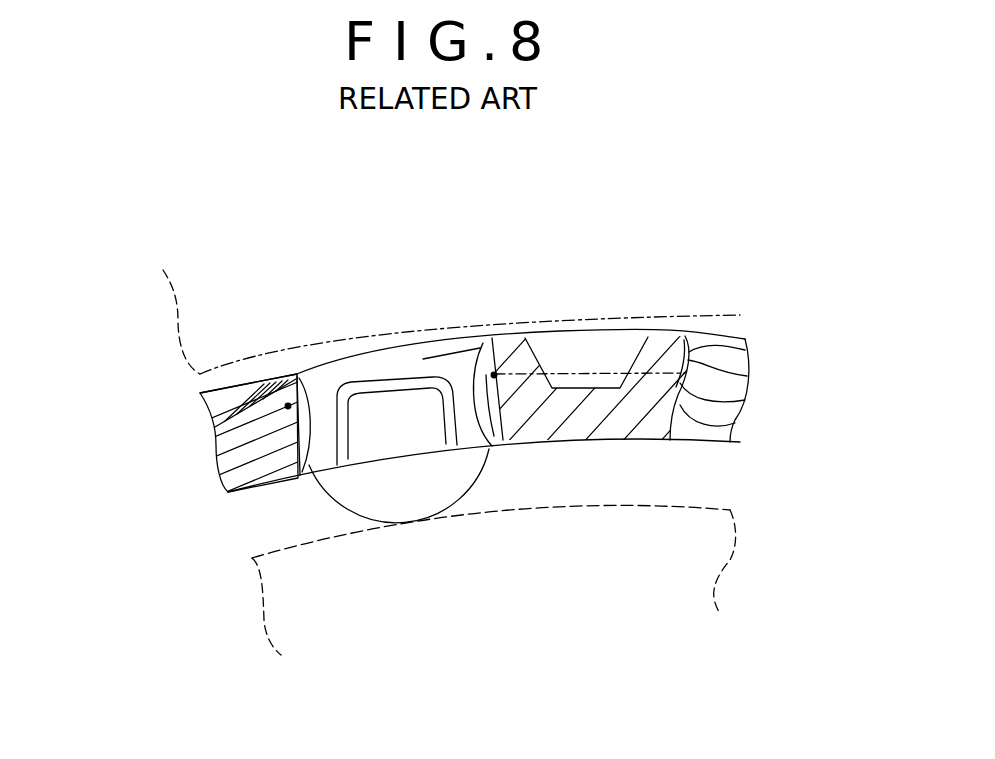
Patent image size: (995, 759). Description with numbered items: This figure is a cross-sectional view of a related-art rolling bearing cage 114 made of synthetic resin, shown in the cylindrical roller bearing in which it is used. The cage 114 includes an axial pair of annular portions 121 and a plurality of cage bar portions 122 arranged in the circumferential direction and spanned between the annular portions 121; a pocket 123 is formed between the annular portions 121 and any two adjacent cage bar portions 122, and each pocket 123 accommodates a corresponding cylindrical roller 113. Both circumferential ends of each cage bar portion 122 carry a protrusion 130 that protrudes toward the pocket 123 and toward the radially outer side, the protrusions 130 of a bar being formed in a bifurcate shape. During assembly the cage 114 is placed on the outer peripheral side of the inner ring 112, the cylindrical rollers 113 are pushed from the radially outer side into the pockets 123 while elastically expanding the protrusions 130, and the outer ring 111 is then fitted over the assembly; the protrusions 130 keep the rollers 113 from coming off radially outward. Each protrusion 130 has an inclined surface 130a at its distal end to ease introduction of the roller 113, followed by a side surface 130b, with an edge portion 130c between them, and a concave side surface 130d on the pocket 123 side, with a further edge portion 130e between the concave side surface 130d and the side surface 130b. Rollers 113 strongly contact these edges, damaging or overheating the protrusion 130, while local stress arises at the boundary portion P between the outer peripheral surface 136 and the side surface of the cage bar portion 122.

The outer ring 111 is at (764, 220).
The inner ring 112 is at (627, 507).
The cylindrical roller 113 is at (474, 515).
The cage 114 is at (192, 407).
The annular portion 121 is at (365, 352).
The cage bar portion 122 is at (587, 420).
The pocket 123 is at (383, 436).
The protrusion 130 is at (248, 410).
The inclined surface 130a is at (683, 334).
The side surface 130b is at (748, 370).
The edge portion 130c is at (745, 347).
The concave side surface 130d is at (733, 420).
The edge portion 130e is at (745, 397).
The outer peripheral surface 136 is at (288, 404).
The boundary portion P is at (303, 474).